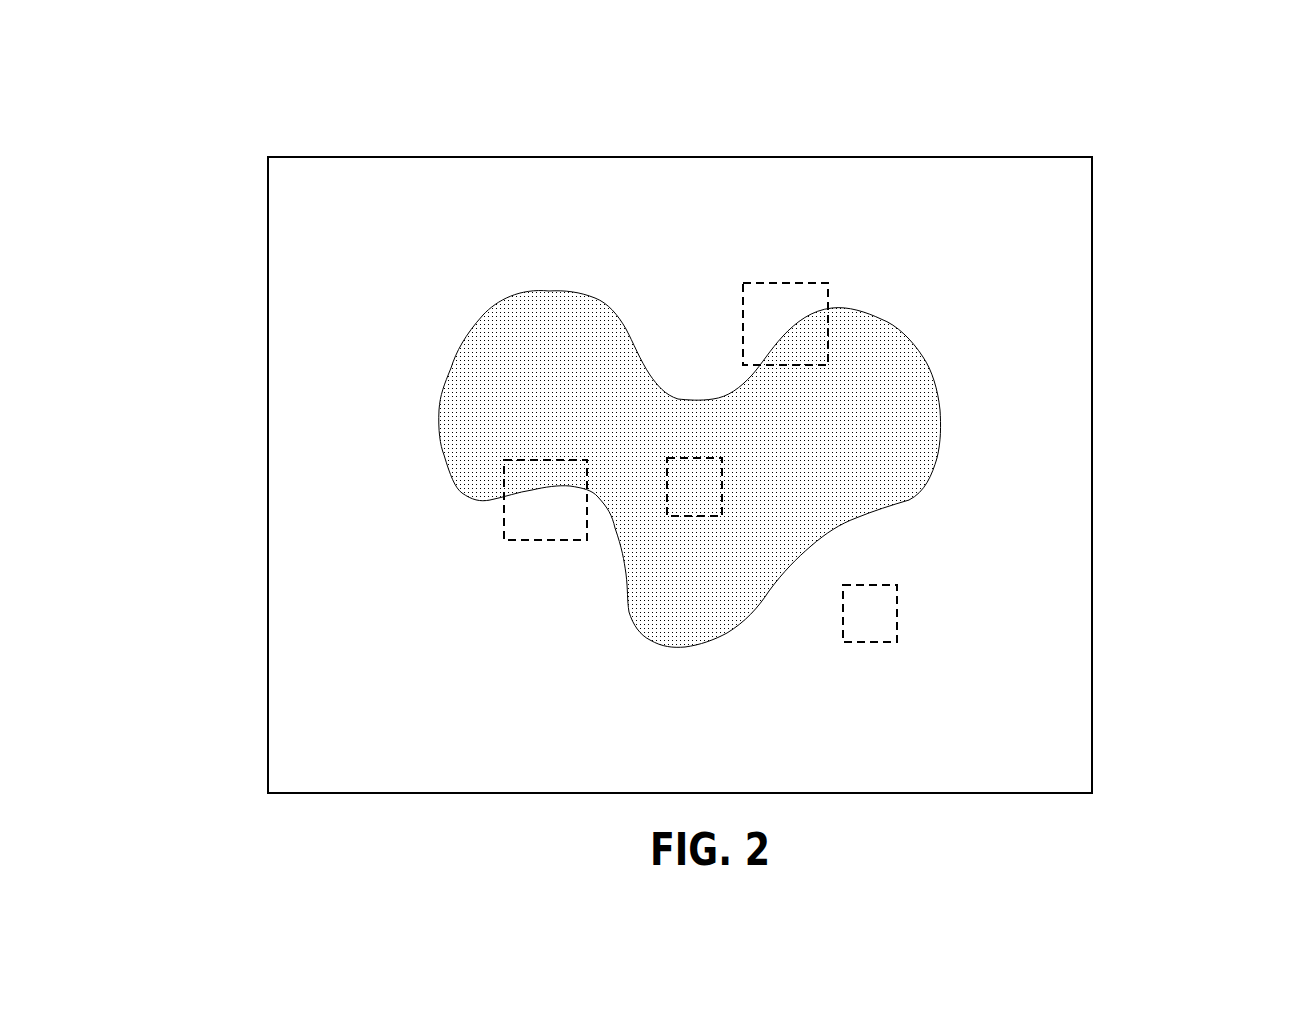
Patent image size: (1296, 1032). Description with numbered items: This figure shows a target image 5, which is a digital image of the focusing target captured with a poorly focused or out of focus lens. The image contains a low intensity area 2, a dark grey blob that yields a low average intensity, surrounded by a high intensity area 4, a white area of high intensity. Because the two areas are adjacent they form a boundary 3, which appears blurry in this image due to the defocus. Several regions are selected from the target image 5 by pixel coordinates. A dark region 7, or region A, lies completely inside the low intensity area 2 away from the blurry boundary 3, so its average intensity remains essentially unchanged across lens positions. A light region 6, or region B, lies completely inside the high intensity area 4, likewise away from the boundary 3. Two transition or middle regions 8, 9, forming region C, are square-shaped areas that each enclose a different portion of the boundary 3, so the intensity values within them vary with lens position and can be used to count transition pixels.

The low intensity area 2 is at (518, 375).
The boundary 3 is at (438, 428).
The high intensity area 4 is at (375, 540).
The target image 5 is at (1102, 152).
The light region 6 is at (897, 613).
The dark region 7 is at (722, 488).
The transition or middle region 8 is at (790, 283).
The transition or middle region 9 is at (545, 540).